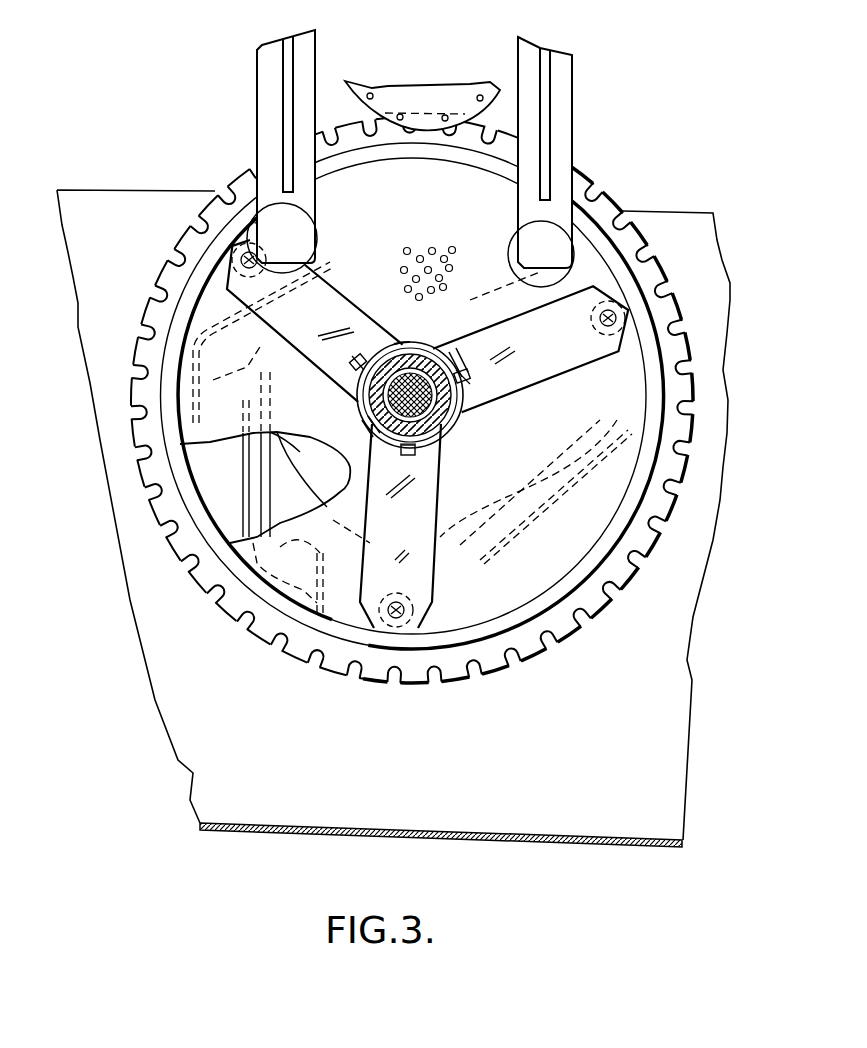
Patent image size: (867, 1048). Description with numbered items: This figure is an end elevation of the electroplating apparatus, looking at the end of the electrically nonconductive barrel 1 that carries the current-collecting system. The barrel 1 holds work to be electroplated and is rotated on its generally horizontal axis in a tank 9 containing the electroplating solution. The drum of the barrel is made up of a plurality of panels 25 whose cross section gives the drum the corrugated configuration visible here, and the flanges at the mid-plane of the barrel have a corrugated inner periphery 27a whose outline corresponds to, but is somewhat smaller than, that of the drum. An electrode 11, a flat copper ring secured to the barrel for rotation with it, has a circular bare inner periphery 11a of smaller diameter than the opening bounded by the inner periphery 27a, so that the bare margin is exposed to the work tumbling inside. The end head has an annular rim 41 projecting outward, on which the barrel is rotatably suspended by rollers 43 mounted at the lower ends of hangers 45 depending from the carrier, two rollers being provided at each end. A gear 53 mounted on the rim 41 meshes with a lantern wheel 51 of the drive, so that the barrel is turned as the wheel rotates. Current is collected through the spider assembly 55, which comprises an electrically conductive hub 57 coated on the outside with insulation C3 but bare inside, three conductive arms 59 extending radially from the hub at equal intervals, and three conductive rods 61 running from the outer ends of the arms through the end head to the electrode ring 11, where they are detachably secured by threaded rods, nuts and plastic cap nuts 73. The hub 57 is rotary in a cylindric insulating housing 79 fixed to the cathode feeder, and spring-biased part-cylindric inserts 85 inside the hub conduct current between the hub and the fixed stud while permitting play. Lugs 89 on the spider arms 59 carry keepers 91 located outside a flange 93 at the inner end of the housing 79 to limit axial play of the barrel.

The barrel 1 is at (296, 678).
The tank 9 is at (352, 832).
The electrode 11 is at (308, 473).
The inner periphery 11a is at (290, 440).
The panels 25 is at (245, 474).
The inner periphery 27a is at (272, 489).
The annular rim 41 is at (165, 355).
The rollers 43 is at (308, 270).
The hangers 45 is at (272, 92).
The lantern wheel 51 is at (447, 88).
The gear 53 is at (458, 672).
The spider assembly 55 is at (454, 486).
The hub 57 is at (450, 422).
The arms 59 is at (288, 333).
The rods 61 is at (228, 238).
The cap nuts 73 is at (242, 280).
The housing 79 is at (406, 348).
The inserts 85 is at (445, 362).
The lugs 89 is at (358, 365).
The keepers 91 is at (360, 390).
The flange 93 is at (418, 350).
The coating C3 is at (440, 442).